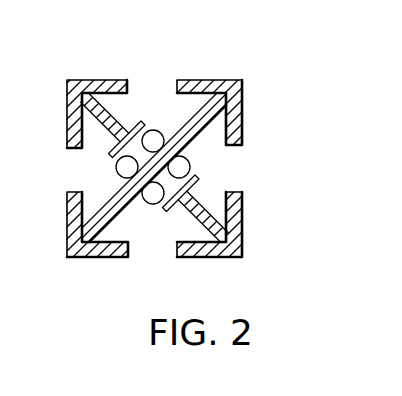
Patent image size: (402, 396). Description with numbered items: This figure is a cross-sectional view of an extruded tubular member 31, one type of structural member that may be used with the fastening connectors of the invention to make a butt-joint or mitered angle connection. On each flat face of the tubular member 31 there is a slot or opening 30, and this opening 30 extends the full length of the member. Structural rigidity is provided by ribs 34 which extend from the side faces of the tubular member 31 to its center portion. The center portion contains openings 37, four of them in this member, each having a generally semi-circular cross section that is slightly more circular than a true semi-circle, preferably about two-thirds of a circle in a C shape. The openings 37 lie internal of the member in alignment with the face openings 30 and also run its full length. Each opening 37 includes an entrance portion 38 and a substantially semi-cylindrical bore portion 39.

The slot or opening 30 is at (150, 86).
The tubular member 31 is at (258, 97).
The rib 34 is at (103, 127).
The opening 37 is at (190, 168).
The entrance portion 38 is at (143, 197).
The semi-cylindrical bore portion 39 is at (167, 197).